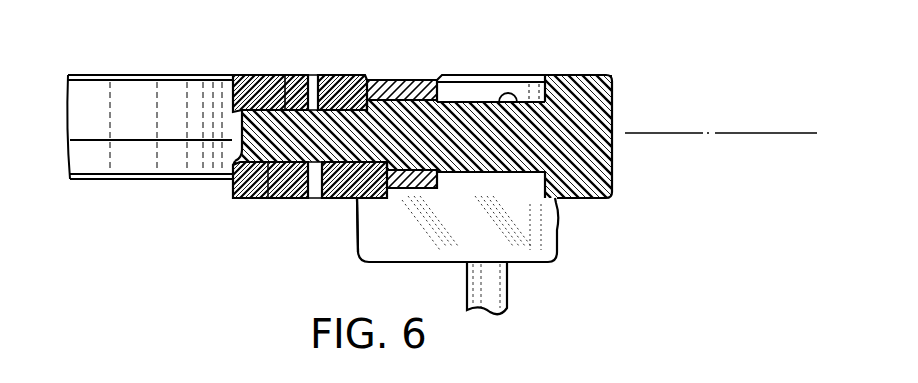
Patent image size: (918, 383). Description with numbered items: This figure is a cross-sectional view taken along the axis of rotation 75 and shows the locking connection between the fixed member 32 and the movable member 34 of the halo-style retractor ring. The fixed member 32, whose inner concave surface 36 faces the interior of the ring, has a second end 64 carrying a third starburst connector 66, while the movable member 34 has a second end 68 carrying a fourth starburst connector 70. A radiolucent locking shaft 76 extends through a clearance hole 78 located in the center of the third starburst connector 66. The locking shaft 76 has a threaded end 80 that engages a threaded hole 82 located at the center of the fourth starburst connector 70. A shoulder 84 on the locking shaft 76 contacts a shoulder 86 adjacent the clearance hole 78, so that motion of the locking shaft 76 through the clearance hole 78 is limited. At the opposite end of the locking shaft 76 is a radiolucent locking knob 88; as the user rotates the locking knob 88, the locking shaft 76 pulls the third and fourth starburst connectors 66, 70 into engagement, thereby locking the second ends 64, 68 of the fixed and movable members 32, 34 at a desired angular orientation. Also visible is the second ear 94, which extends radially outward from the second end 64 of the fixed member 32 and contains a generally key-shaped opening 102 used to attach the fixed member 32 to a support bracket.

The fixed member 32 is at (96, 72).
The inner concave surface 36 is at (146, 121).
The movable member 34 is at (253, 70).
The threaded hole 82 is at (284, 75).
The third starburst connector 66 is at (312, 75).
The second end 64 is at (343, 75).
The shoulder 84 is at (374, 79).
The clearance hole 78 is at (392, 104).
The locking shaft 76 is at (437, 78).
The axis of rotation 75 is at (700, 132).
The threaded end 80 is at (236, 173).
The second end 68 is at (274, 202).
The fourth starburst connector 70 is at (314, 201).
The shoulder 86 is at (392, 196).
The locking knob 88 is at (585, 200).
The key-shaped opening 102 is at (565, 232).
The second ear 94 is at (543, 264).